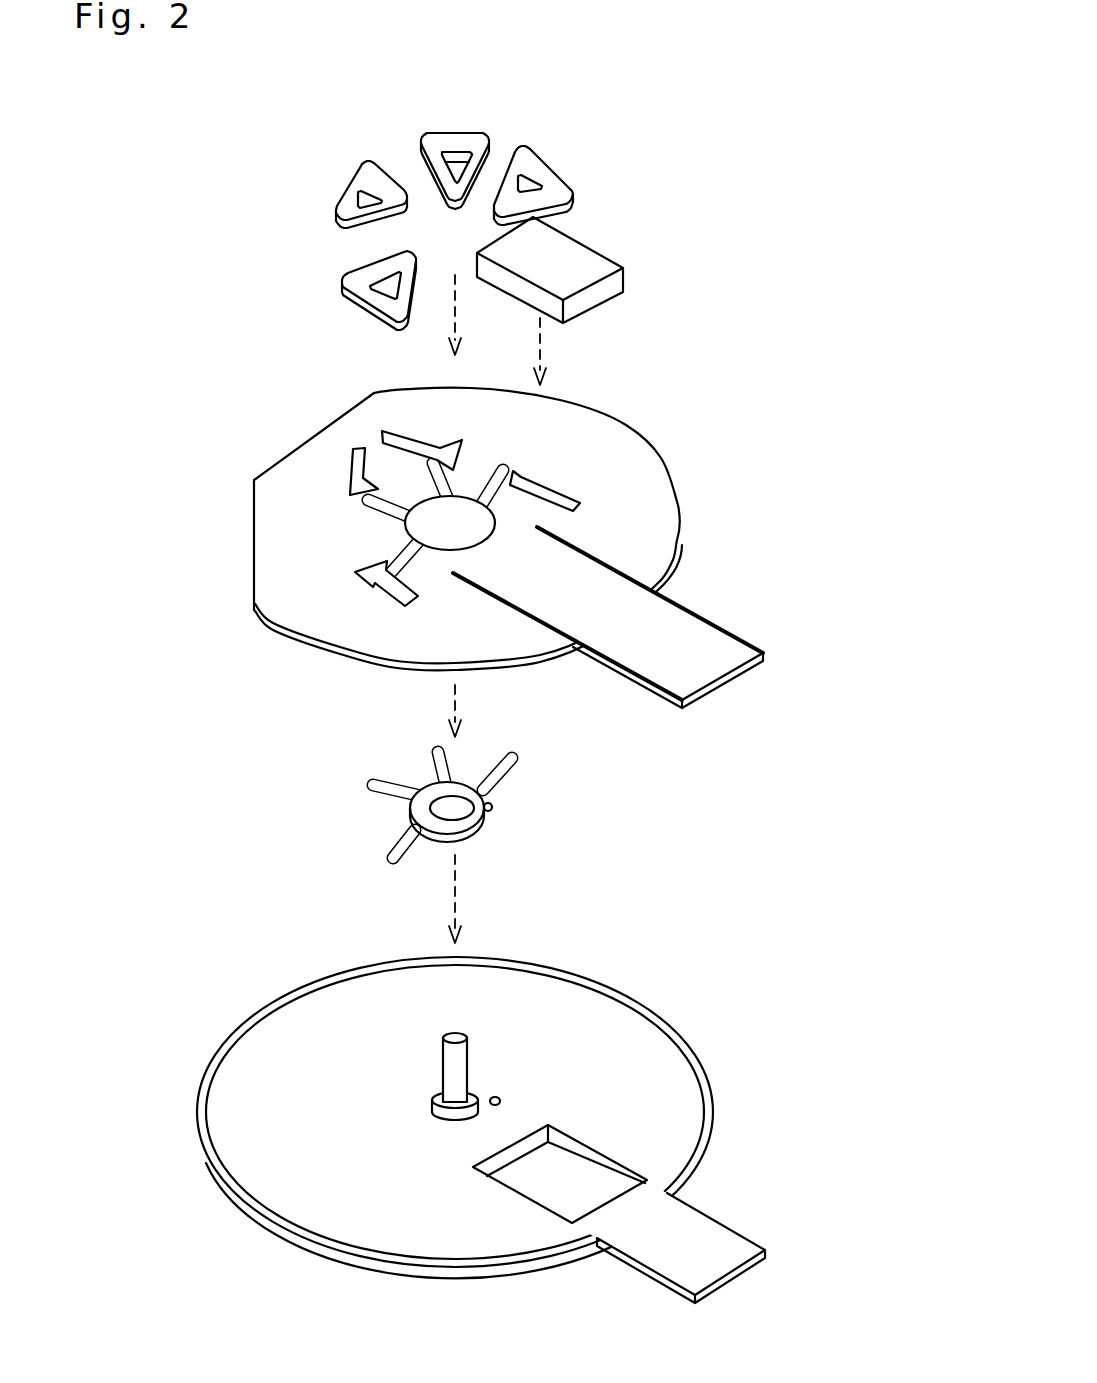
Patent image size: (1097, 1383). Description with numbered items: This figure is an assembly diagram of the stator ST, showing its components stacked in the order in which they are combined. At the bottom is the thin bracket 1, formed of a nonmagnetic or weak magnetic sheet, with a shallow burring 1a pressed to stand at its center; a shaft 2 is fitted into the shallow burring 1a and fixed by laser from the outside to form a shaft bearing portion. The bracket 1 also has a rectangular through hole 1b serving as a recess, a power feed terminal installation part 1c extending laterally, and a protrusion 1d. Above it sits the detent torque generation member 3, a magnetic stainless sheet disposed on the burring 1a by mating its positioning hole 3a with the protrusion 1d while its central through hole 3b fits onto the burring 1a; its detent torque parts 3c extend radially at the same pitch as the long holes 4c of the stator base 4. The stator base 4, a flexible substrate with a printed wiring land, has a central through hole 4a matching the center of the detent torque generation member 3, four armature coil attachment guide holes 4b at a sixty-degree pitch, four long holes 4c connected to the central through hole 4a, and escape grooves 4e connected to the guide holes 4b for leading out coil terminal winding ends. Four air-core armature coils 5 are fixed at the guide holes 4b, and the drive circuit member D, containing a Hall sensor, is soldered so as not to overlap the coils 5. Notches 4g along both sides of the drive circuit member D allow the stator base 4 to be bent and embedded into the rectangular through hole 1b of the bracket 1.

The bracket 1 is at (714, 998).
The shallow burring 1a is at (433, 1100).
The rectangular through hole 1b is at (560, 1192).
The power feed terminal installation part 1c is at (705, 1232).
The protrusion 1d is at (500, 1100).
The shaft 2 is at (460, 1070).
The detent torque generation member 3 is at (439, 779).
The positioning hole 3a is at (492, 805).
The central through hole 3b is at (412, 806).
The detent torque parts 3c is at (437, 752).
The stator base 4 is at (698, 436).
The central through hole 4a is at (470, 533).
The armature coil attachment guide holes 4b is at (450, 440).
The long holes 4c is at (370, 503).
The escape grooves 4e is at (380, 590).
The notches 4g is at (540, 622).
The air-core armature coils 5 is at (353, 192).
The drive circuit member D is at (573, 258).
The stator ST is at (956, 737).